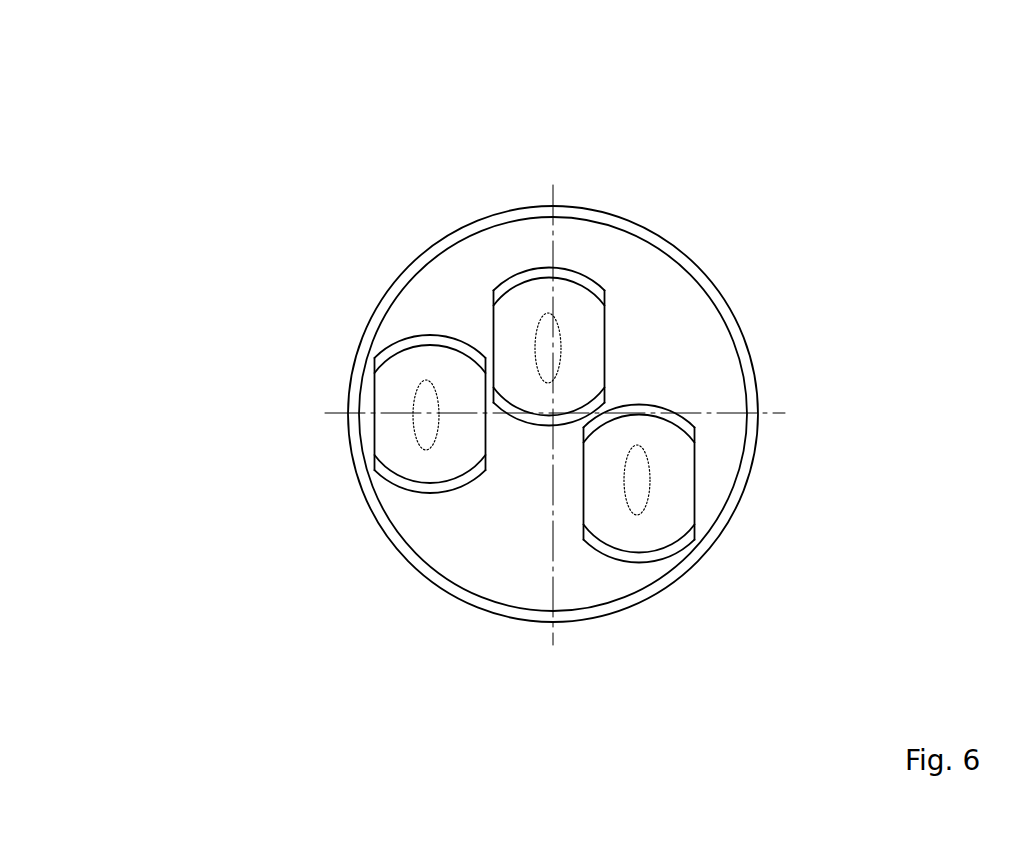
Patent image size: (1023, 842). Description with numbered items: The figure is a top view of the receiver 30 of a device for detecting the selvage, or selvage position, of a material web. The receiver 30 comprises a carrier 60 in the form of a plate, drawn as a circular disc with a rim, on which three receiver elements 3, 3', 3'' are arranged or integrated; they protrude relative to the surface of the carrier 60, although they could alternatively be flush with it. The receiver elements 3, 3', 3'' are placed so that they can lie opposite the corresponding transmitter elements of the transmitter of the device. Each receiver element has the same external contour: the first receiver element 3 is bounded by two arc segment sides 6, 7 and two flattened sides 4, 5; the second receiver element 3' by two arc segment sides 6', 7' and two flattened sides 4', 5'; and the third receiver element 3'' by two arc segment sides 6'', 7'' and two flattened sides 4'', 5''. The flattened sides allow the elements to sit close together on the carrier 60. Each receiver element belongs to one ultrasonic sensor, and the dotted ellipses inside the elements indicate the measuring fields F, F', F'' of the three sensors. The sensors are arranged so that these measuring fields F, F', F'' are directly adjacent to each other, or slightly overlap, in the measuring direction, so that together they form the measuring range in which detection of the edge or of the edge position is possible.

The receiver 30 is at (248, 153).
The carrier 60 is at (477, 567).
The receiver element 3 is at (692, 508).
The flattened side 4 is at (517, 569).
The flattened side 5 is at (769, 483).
The arc segment side 6 is at (639, 626).
The arc segment side 7 is at (723, 368).
The measuring field F is at (690, 562).
The receiver element 3' is at (547, 265).
The flattened side 4' is at (423, 274).
The flattened side 5' is at (652, 280).
The arc segment side 6' is at (634, 323).
The arc segment side 7' is at (549, 241).
The measuring field F' is at (599, 246).
The receiver element 3'' is at (354, 363).
The flattened side 4'' is at (325, 447).
The flattened side 5'' is at (392, 512).
The arc segment side 6'' is at (354, 553).
The arc segment side 7'' is at (398, 290).
The measuring field F'' is at (295, 466).